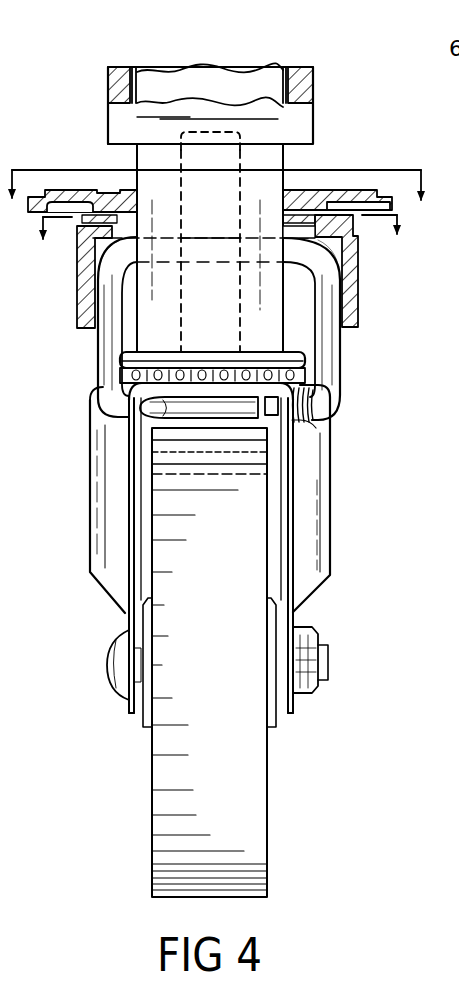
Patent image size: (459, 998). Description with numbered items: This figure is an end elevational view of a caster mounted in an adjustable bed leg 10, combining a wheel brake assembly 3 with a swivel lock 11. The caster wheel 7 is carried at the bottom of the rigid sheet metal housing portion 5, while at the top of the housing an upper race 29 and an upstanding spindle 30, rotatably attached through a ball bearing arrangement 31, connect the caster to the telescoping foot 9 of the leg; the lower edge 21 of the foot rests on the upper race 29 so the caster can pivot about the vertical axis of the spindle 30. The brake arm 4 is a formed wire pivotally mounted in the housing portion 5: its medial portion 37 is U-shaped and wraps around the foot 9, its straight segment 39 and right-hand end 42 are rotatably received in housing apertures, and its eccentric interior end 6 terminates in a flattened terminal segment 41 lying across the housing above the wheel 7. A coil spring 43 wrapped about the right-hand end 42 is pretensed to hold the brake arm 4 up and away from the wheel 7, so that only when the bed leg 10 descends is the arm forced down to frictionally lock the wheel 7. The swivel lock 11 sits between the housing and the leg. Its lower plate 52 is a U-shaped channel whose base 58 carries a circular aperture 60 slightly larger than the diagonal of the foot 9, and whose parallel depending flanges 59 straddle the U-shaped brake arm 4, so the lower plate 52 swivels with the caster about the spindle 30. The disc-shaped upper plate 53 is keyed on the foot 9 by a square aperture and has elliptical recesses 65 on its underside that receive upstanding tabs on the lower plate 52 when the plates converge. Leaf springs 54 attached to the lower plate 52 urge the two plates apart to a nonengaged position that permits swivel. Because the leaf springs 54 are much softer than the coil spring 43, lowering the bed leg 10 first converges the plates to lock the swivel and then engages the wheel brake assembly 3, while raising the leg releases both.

The wheel brake assembly 3 is at (97, 357).
The brake arm 4 is at (327, 355).
The housing portion 5 is at (323, 508).
The eccentric interior end 6 is at (140, 416).
The caster wheel 7 is at (253, 840).
The telescoping foot 9 is at (212, 80).
The bed leg 10 is at (310, 92).
The swivel lock 11 is at (396, 182).
The lower edge of the foot 21 is at (117, 144).
The upper race 29 is at (203, 352).
The spindle 30 is at (243, 188).
The ball bearing arrangement 31 is at (250, 375).
The medial portion of brake arm 37 is at (207, 248).
The straight segment 39 is at (103, 413).
The flattened terminal segment 41 is at (213, 412).
The right-hand end of brake arm 42 is at (335, 402).
The coil spring 43 is at (308, 420).
The lower plate 52 is at (350, 265).
The upper plate 53 is at (345, 190).
The leaf spring 54 is at (93, 221).
The base of lower plate 58 is at (100, 300).
The depending flanges 59 is at (97, 347).
The circular aperture 60 is at (295, 232).
The recesses 65 is at (62, 203).